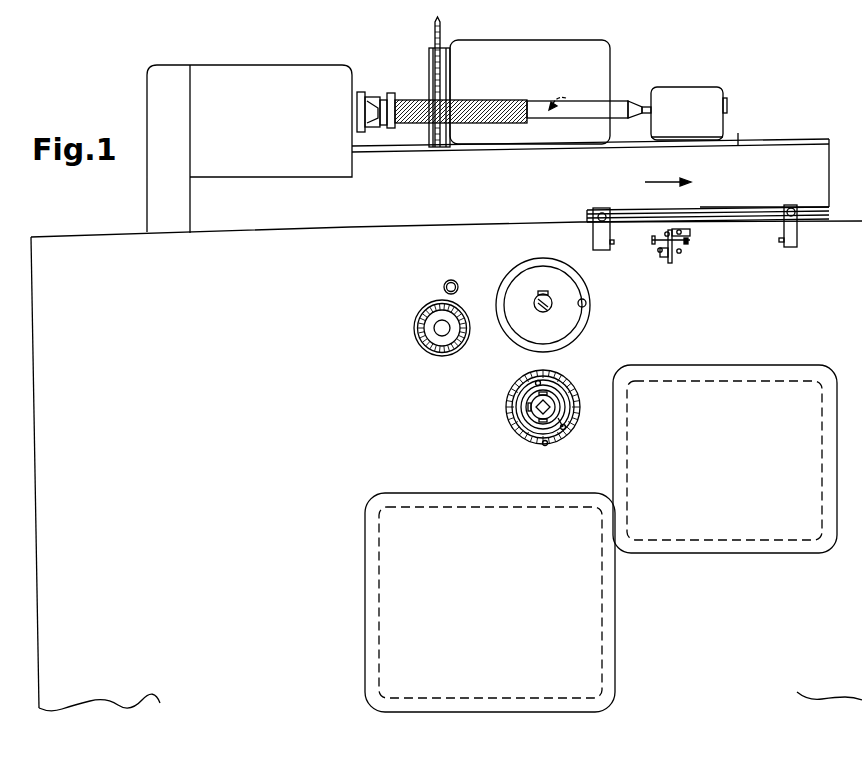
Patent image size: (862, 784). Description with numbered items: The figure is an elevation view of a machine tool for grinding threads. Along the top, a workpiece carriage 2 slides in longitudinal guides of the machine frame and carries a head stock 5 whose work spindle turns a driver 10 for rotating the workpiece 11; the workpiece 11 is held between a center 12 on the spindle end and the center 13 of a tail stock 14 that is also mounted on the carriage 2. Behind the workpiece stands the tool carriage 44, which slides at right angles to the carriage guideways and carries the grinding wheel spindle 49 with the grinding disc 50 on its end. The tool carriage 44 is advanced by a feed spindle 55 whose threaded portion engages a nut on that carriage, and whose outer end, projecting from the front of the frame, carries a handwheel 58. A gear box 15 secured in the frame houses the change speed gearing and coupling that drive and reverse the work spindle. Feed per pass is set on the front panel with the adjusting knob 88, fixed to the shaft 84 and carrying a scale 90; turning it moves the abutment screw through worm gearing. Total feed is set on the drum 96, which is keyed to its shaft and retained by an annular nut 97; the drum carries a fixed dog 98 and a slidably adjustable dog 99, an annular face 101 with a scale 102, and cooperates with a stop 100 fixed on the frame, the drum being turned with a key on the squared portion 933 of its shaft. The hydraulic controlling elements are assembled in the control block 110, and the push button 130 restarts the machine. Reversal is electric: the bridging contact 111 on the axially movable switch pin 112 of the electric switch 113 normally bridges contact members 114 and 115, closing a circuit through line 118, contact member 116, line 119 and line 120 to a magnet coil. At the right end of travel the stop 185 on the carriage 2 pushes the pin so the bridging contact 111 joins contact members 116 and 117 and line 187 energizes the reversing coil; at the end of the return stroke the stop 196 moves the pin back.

The workpiece carriage 2 is at (765, 141).
The head stock 5 is at (262, 66).
The driver 10 is at (388, 98).
The workpiece 11 is at (512, 100).
The center 12 is at (372, 113).
The center 13 is at (640, 102).
The tail stock 14 is at (697, 92).
The gear box 15 is at (490, 602).
The tool carriage 44 is at (550, 50).
The grinding wheel spindle 49 is at (449, 98).
The grinding disc 50 is at (442, 38).
The feed spindle 55 is at (546, 313).
The handwheel 58 is at (586, 300).
The shaft 84 is at (441, 322).
The adjusting knob 88 is at (420, 328).
The scale 90 is at (435, 349).
The drum 96 is at (562, 392).
The annular nut 97 is at (527, 416).
The dog 98 is at (565, 430).
The dog 99 is at (541, 380).
The stop 100 is at (541, 443).
The annular face 101 is at (577, 414).
The scale 102 is at (578, 400).
The control block 110 is at (725, 459).
The bridging contact 111 is at (660, 238).
The switch pin 112 is at (683, 247).
The electric switch 113 is at (660, 259).
The contact member 114 is at (665, 234).
The contact member 115 is at (659, 252).
The contact member 116 is at (683, 232).
The contact member 117 is at (681, 258).
The line 118 is at (712, 223).
The line 119 is at (677, 230).
The line 120 is at (688, 243).
The push button 130 is at (454, 281).
The stop 185 is at (597, 247).
The line 187 is at (714, 250).
The stop 196 is at (798, 245).
The squared portion 933 is at (540, 407).